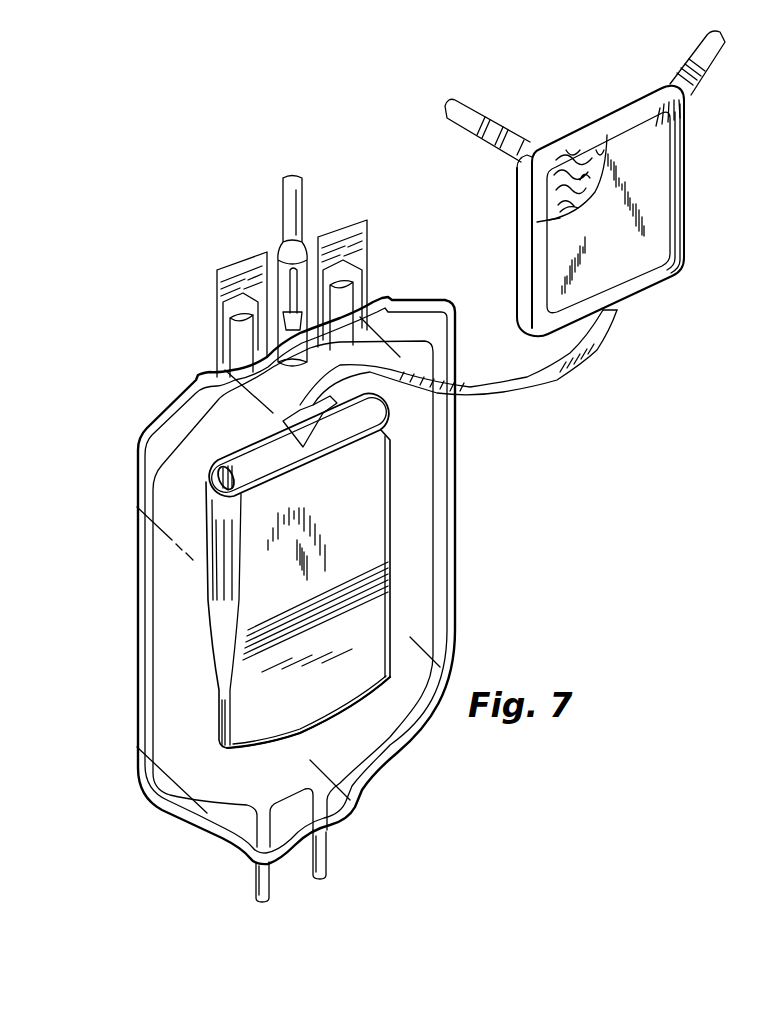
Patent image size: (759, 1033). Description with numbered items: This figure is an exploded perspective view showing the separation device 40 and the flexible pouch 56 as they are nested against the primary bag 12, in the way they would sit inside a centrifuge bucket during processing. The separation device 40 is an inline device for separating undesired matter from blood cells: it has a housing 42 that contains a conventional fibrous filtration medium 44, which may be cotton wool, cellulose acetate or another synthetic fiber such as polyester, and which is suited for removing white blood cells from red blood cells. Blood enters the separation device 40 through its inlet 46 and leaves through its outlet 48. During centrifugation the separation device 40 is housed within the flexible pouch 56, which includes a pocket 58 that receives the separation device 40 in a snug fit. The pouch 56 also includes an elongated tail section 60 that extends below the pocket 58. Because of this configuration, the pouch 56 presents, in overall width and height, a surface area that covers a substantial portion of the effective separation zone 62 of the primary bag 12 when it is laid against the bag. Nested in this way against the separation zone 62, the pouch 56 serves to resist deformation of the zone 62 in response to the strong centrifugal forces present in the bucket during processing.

The primary bag 12 is at (458, 503).
The separation device 40 is at (598, 183).
The housing 42 is at (637, 211).
The fibrous filtration medium 44 is at (572, 155).
The inlet 46 is at (697, 78).
The outlet 48 is at (497, 130).
The flexible pouch 56 is at (351, 570).
The pocket 58 is at (247, 431).
The elongated tail section 60 is at (363, 660).
The effective separation zone 62 is at (183, 529).